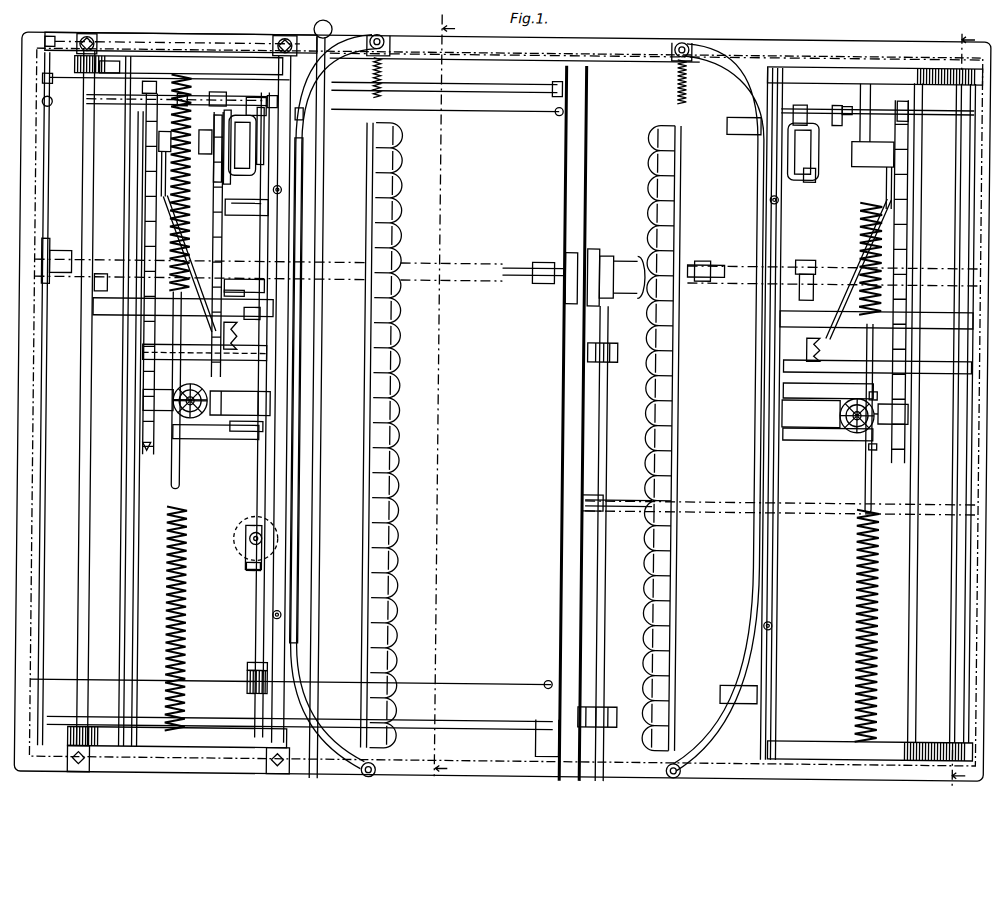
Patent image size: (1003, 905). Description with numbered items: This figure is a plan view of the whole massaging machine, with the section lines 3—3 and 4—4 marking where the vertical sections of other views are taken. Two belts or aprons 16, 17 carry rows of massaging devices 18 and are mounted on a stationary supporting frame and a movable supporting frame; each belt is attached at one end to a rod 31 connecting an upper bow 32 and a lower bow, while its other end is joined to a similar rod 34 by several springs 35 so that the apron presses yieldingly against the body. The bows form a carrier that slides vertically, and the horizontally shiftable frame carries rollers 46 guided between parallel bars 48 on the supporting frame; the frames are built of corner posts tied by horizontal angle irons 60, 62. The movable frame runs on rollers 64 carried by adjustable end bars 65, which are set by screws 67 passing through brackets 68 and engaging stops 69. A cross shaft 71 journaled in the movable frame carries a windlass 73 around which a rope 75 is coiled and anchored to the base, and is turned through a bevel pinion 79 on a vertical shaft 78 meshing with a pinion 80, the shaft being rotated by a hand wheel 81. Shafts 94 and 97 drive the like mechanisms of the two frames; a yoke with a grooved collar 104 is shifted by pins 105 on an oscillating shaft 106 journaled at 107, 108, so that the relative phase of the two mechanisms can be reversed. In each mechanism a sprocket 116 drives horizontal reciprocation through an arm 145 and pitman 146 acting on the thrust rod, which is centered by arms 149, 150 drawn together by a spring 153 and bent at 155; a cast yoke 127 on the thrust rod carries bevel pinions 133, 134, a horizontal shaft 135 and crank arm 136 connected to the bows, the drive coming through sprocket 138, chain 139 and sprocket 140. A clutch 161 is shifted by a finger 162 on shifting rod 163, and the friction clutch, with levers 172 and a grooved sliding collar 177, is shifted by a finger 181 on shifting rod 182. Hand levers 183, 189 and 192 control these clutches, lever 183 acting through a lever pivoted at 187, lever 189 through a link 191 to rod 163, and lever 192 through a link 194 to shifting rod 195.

The section line 3— 3 is at (447, 394).
The section line 4— 4 is at (972, 404).
The belt or apron 16 is at (683, 440).
The belt or apron 17 is at (368, 412).
The massaging devices 18 is at (402, 454).
The rod 31 is at (383, 762).
The upper bow 32 is at (303, 489).
The rod 34 is at (379, 31).
The springs 35 is at (382, 70).
The roller 46 is at (284, 188).
The parallel bar 48 is at (303, 598).
The horizontal angle iron 60 is at (84, 586).
The horizontal angle iron 62 is at (126, 541).
The roller 64 is at (48, 36).
The adjustable end bar 65 is at (183, 32).
The screw 67 is at (288, 36).
The bracket 68 is at (278, 33).
The stop 69 is at (318, 390).
The cross shaft 71 is at (262, 462).
The spool or windlass 73 is at (256, 660).
The rope or wire 75 is at (254, 676).
The vertical shaft 78 is at (255, 538).
The bevel pinion 79 is at (251, 530).
The bevel pinion 80 is at (252, 562).
The hand wheel 81 is at (252, 514).
The shaft 94 is at (718, 254).
The shaft 97 is at (520, 272).
The grooved collar 104 is at (605, 243).
The pins 105 is at (575, 298).
The oscillating shaft 106 is at (613, 598).
The journal 107 is at (618, 352).
The journal 108 is at (620, 701).
The sprocket 116 is at (225, 98).
The cast yoke 127 is at (230, 413).
The bevel pinion 133 is at (180, 410).
The bevel pinion 134 is at (194, 416).
The horizontal shaft 135 is at (147, 398).
The crank arm 136 is at (805, 447).
The sprocket 138 is at (151, 449).
The chain 139 is at (147, 232).
The sprocket 140 is at (152, 88).
The arm 145 is at (160, 140).
The pitman 146 is at (163, 180).
The arm 149 is at (881, 438).
The arm 150 is at (881, 387).
The spring 153 is at (175, 200).
The bent upper end 155 is at (190, 380).
The clutch 161 is at (242, 340).
The finger 162 is at (263, 318).
The shifting rod 163 is at (100, 300).
The levers 172 is at (815, 174).
The grooved sliding collar 177 is at (257, 150).
The finger 181 is at (802, 97).
The shifting rod 182 is at (850, 98).
The hand lever 183 is at (244, 275).
The pivot 187 is at (252, 88).
The hand lever 189 is at (246, 216).
The link 191 is at (270, 283).
The hand lever 192 is at (306, 105).
The link 194 is at (205, 95).
The shifting rod 195 is at (110, 98).